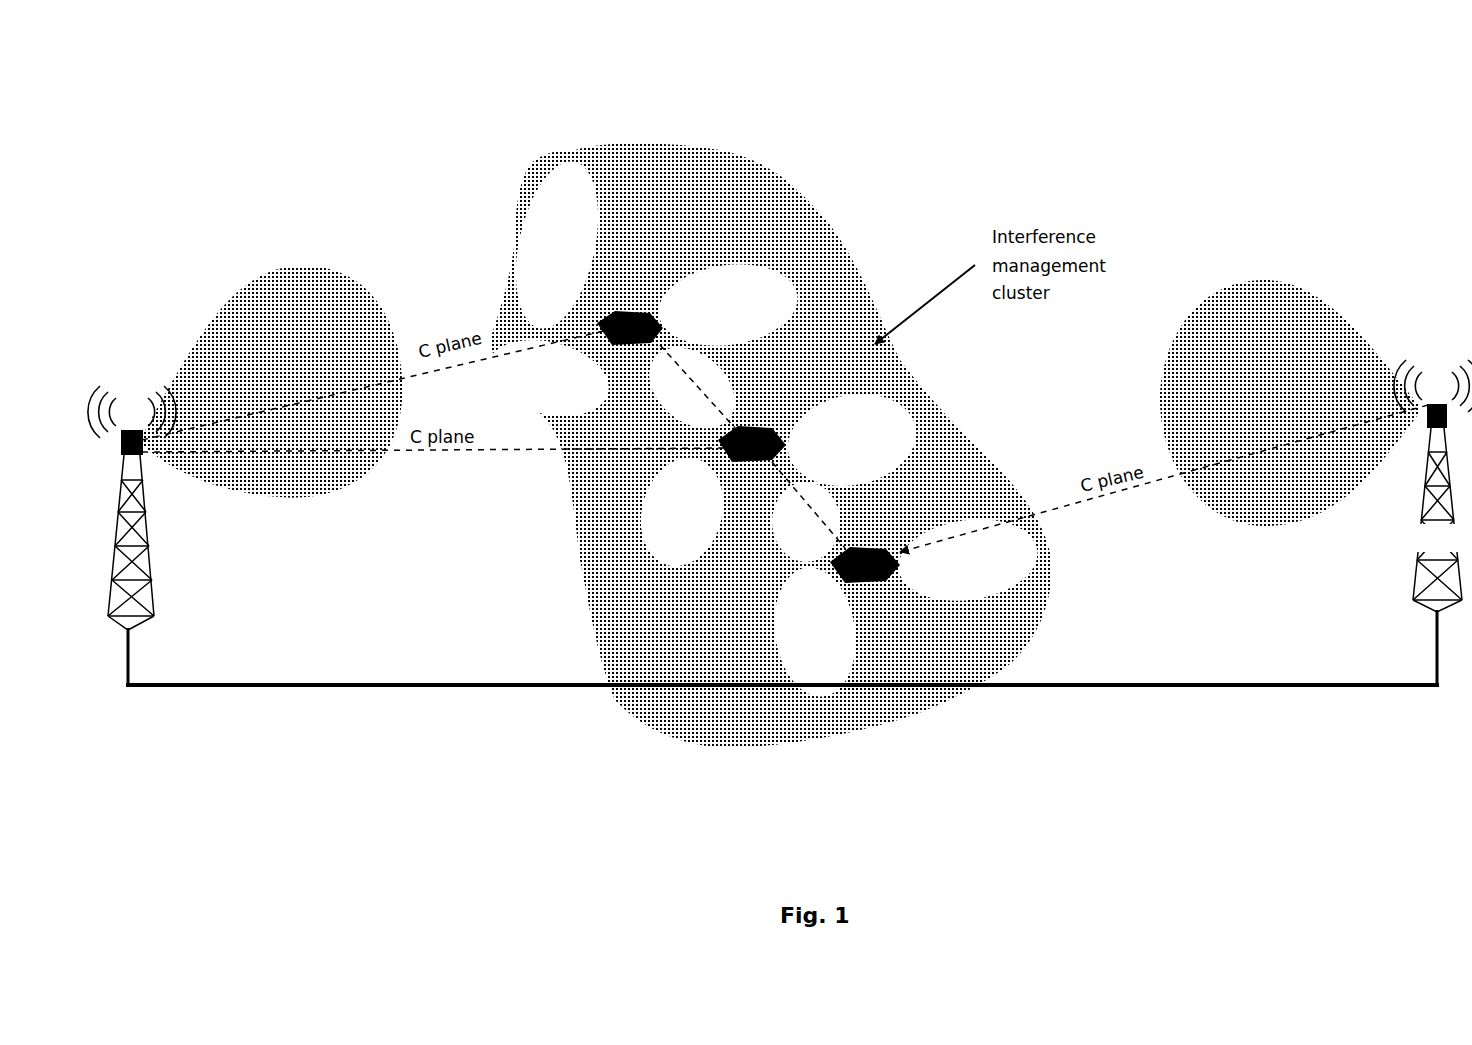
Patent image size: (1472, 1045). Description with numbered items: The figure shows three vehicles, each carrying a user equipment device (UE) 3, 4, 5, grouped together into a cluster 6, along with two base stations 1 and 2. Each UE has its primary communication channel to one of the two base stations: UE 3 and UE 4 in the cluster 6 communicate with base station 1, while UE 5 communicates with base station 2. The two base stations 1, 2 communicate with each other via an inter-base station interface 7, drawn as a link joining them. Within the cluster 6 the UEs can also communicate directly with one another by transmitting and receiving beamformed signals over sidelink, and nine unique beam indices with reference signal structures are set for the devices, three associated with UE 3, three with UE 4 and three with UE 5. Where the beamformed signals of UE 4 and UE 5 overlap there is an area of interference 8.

The base station 1 is at (131, 415).
The base station 2 is at (1433, 400).
The user equipment device 3 is at (626, 318).
The user equipment device 4 is at (767, 426).
The user equipment device 5 is at (884, 592).
The cluster 6 is at (668, 200).
The inter-base station interface 7 is at (452, 690).
The area of interference 8 is at (825, 503).